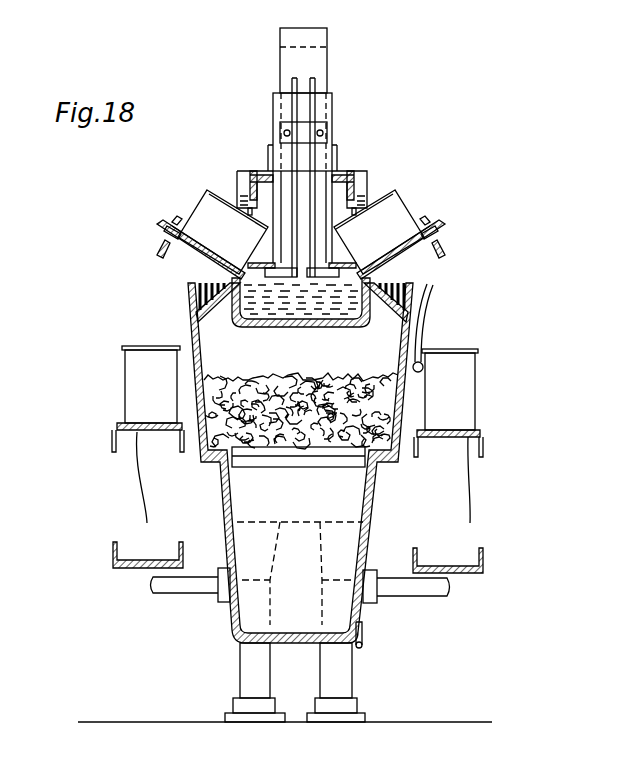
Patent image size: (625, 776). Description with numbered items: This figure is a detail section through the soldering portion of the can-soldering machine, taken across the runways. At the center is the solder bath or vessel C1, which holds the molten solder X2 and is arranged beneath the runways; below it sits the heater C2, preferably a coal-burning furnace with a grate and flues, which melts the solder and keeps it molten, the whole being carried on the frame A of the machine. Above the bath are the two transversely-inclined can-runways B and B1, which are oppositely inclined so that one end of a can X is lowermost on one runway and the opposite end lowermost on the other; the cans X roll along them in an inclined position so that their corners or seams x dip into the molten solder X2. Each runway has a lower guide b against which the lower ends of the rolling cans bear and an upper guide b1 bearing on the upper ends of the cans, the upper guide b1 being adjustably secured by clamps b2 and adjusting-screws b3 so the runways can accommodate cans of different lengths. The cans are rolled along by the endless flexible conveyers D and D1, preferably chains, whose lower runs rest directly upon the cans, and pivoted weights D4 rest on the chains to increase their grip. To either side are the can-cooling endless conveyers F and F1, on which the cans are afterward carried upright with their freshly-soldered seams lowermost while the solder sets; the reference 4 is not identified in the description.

The upper housing / sleeve 4 is at (262, 165).
The endless flexible conveyer D is at (245, 181).
The endless flexible conveyer D1 is at (234, 206).
The pivoted weight D4 is at (366, 175).
The lower guide b is at (261, 265).
The upper guide b1 is at (189, 217).
The clamp b2 is at (470, 186).
The adjusting-screw b3 is at (172, 226).
The can-runway B is at (442, 258).
The can-runway B1 is at (187, 254).
The can X is at (300, 310).
The corner or seam x is at (302, 248).
The molten solder X2 is at (305, 303).
The solder bath or vessel C1 is at (348, 323).
The heater C2 is at (222, 480).
The can-cooling endless conveyer F is at (462, 561).
The can-cooling endless conveyer F1 is at (145, 553).
The frame A is at (238, 652).